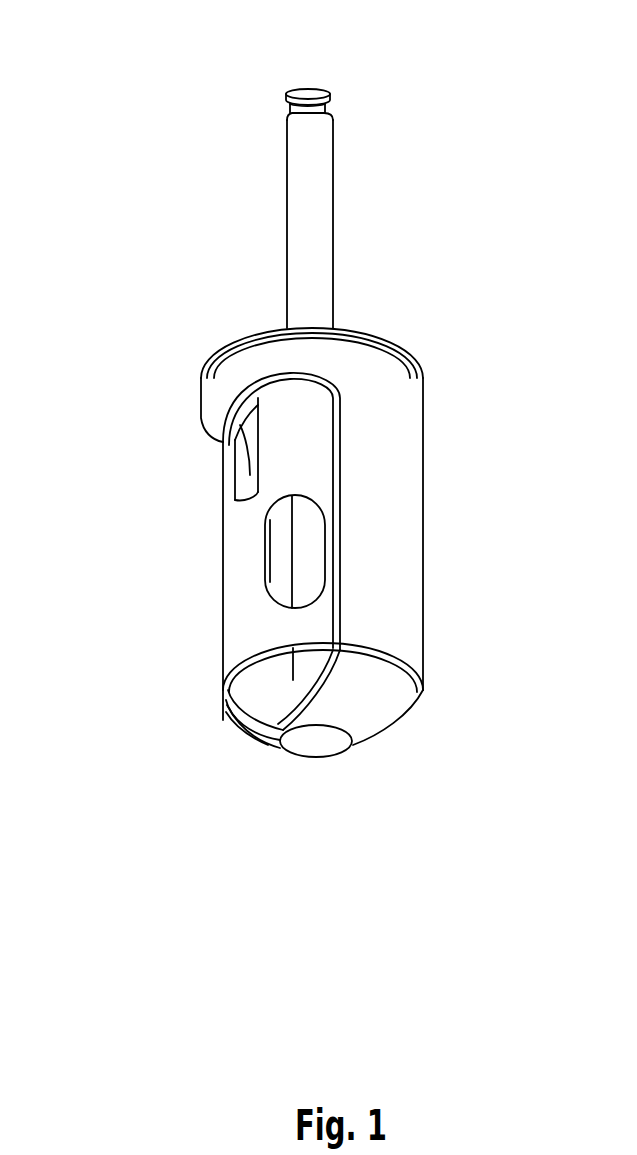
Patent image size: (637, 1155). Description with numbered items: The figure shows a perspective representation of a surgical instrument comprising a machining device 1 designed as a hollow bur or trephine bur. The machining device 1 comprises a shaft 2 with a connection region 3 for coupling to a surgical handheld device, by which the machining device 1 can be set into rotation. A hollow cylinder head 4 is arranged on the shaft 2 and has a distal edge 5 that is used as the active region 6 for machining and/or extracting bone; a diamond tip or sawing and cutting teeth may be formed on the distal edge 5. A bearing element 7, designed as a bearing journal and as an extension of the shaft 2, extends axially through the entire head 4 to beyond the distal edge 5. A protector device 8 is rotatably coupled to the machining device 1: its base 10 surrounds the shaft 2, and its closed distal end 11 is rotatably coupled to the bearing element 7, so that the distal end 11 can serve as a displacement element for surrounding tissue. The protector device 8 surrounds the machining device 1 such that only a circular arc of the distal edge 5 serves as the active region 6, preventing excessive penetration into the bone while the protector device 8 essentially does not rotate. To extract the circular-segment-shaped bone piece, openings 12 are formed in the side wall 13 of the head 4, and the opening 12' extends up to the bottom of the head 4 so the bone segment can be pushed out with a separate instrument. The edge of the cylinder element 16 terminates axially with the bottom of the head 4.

The machining device 1 is at (320, 242).
The shaft 2 is at (300, 195).
The connection region 3 is at (320, 110).
The hollow cylinder head 4 is at (225, 655).
The distal edge 5 is at (225, 680).
The active region 6 is at (227, 723).
The bearing element 7 is at (300, 540).
The protector device 8 is at (393, 350).
The base 10 is at (358, 333).
The distal end 11 is at (315, 736).
The opening 12 is at (223, 551).
The opening 12' is at (162, 448).
The side wall 13 is at (245, 640).
The cylinder element 16 is at (408, 500).